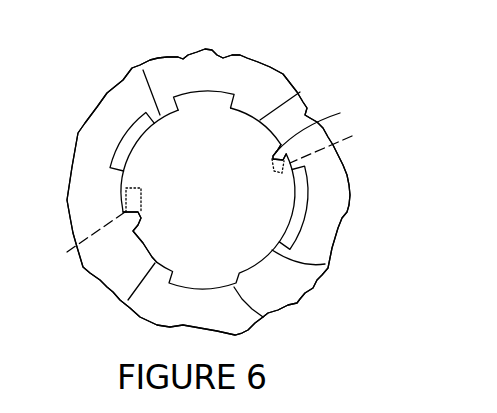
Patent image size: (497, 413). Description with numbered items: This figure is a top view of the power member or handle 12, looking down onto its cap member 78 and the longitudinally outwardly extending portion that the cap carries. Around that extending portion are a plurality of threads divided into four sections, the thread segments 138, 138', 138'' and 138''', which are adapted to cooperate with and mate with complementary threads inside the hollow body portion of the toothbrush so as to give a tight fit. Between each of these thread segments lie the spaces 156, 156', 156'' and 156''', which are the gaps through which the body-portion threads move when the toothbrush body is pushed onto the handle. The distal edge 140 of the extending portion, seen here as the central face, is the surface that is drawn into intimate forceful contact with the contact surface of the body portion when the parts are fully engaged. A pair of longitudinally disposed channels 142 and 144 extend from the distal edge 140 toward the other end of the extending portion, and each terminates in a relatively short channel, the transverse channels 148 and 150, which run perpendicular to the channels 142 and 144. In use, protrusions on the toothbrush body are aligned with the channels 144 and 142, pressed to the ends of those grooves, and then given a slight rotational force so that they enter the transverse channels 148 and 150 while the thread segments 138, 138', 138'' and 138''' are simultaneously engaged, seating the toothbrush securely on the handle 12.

The power member or handle 12 is at (219, 42).
The cap member 78 is at (186, 67).
The thread segment 138 is at (335, 207).
The thread segment 138' is at (276, 308).
The thread segment 138'' is at (96, 131).
The thread segment 138''' is at (247, 74).
The distal edge 140 is at (224, 199).
The longitudinal channel 142 is at (136, 233).
The longitudinal channel 144 is at (320, 130).
The transverse channel 148 is at (67, 252).
The transverse channel 150 is at (324, 148).
The space between thread segments 156 is at (319, 263).
The space between thread segments 156' is at (302, 94).
The space between thread segments 156'' is at (130, 77).
The space between thread segments 156''' is at (129, 305).